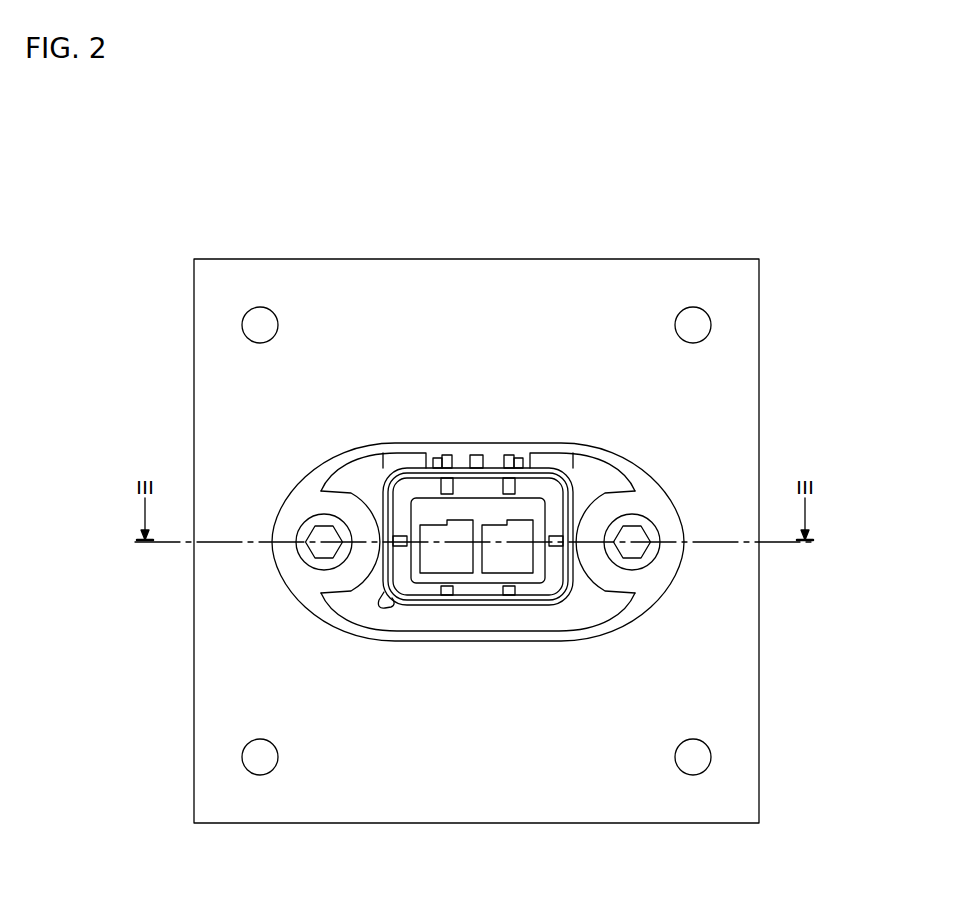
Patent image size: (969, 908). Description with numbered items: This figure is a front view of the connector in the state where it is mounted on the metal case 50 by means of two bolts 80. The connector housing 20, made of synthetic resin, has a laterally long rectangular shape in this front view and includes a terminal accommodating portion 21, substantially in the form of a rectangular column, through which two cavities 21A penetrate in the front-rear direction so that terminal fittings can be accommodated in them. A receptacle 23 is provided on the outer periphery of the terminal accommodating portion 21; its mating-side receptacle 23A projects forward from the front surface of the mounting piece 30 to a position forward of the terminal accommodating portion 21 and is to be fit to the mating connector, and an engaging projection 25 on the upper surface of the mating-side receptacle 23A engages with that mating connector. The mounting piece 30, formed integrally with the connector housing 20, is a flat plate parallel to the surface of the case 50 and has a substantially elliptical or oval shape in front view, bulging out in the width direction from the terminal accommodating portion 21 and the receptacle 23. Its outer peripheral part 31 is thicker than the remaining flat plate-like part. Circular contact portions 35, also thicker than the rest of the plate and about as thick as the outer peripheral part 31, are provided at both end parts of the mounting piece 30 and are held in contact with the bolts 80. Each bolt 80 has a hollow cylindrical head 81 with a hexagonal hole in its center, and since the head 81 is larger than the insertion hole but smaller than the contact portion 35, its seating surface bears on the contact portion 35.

The connector housing 20 is at (568, 588).
The terminal accommodating portion 21 is at (546, 563).
The cavities 21A is at (421, 562).
The receptacle 23 is at (408, 743).
The mating-side receptacle 23A is at (392, 607).
The engaging projection 25 is at (477, 455).
The mounting piece 30 is at (405, 444).
The outer peripheral part 31 is at (347, 622).
The contact portions 35 is at (350, 491).
The case 50 is at (703, 375).
The bolts 80 is at (484, 609).
The head 81 is at (293, 556).